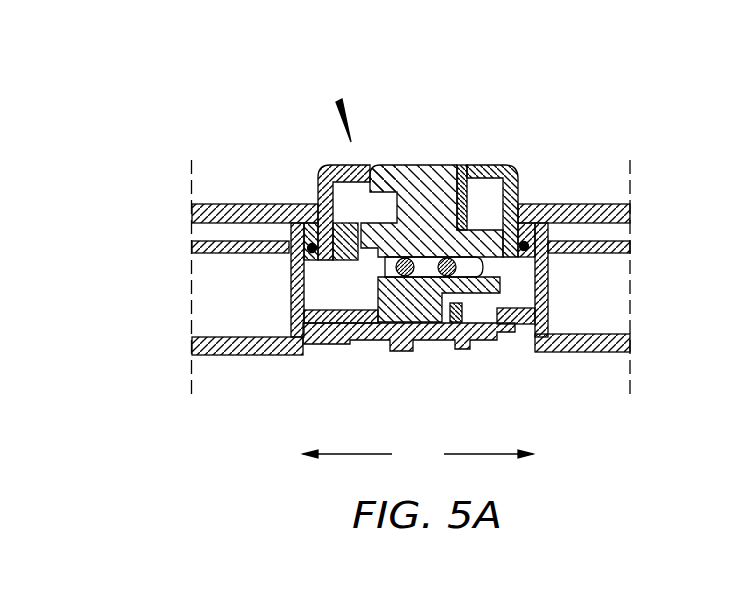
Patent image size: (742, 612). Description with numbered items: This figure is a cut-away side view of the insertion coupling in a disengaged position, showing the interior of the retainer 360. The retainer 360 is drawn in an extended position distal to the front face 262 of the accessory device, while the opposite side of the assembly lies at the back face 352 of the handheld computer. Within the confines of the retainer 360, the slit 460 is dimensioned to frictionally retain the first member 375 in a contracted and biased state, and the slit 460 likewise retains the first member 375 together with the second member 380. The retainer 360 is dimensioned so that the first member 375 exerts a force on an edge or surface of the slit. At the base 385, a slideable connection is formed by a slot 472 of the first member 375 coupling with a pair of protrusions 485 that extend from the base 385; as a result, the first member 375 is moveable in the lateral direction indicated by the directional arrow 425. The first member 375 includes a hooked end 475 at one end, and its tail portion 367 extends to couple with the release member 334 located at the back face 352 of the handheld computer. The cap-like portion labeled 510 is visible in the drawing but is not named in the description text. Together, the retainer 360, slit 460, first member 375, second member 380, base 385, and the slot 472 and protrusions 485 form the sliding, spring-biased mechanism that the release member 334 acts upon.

The back face 352 is at (243, 348).
The front face 262 is at (588, 204).
The cap 510 is at (350, 165).
The retainer 360 is at (338, 101).
The first member 375 is at (430, 164).
The hooked end 475 is at (393, 164).
The slit 460 is at (455, 166).
The second member 380 is at (490, 164).
The slot 472 is at (485, 265).
The base 385 is at (380, 260).
The pair of protrusions 485 is at (388, 292).
The tail portion 367 is at (428, 310).
The release member 334 is at (476, 337).
The directional arrow 425 is at (418, 452).